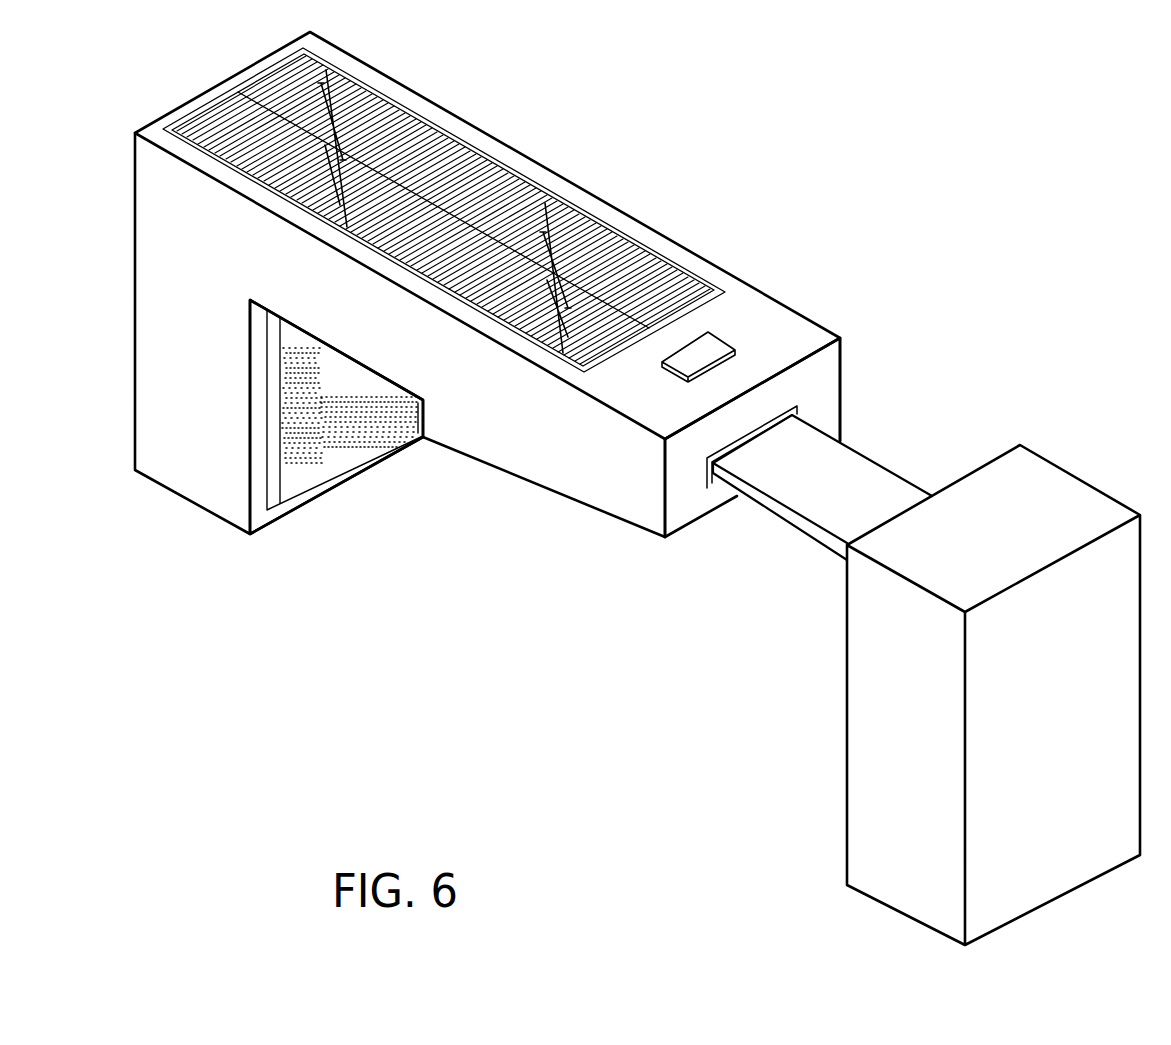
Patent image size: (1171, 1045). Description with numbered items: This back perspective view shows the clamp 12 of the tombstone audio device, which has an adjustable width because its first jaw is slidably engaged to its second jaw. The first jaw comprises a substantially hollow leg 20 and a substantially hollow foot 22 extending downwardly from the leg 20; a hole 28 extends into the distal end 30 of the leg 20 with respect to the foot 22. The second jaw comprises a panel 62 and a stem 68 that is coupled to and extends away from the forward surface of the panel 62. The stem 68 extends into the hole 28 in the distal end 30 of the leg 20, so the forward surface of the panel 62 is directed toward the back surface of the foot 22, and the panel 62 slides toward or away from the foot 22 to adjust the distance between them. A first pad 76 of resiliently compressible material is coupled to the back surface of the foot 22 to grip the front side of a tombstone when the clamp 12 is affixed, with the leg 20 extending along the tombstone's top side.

The clamp 12 is at (595, 130).
The leg 20 is at (614, 513).
The foot 22 is at (251, 534).
The hole 28 is at (720, 492).
The distal end 30 is at (817, 380).
The panel 62 is at (1048, 895).
The stem 68 is at (781, 518).
The first pad 76 is at (338, 446).